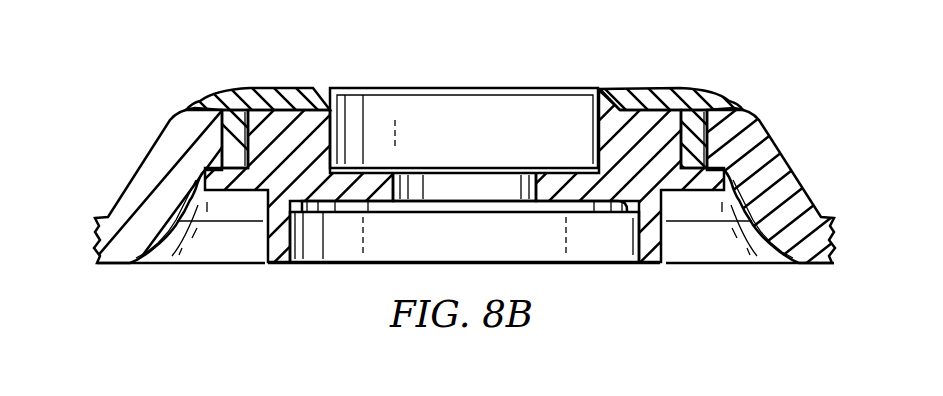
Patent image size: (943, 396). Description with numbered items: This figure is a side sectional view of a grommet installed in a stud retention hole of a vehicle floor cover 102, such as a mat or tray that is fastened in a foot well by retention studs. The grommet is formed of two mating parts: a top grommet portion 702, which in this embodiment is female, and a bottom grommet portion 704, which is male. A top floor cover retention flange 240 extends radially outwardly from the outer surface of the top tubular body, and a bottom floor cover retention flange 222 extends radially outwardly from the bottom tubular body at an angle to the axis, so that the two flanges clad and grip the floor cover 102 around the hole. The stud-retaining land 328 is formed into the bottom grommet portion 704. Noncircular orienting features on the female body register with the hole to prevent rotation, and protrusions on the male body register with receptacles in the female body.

The vehicle floor cover 102 is at (97, 241).
The bottom floor cover retention flange 222 is at (226, 183).
The top floor cover retention flange 240 is at (270, 88).
The stud-retaining land 328 is at (373, 168).
The top grommet portion 702 is at (290, 72).
The bottom grommet portion 704 is at (681, 248).